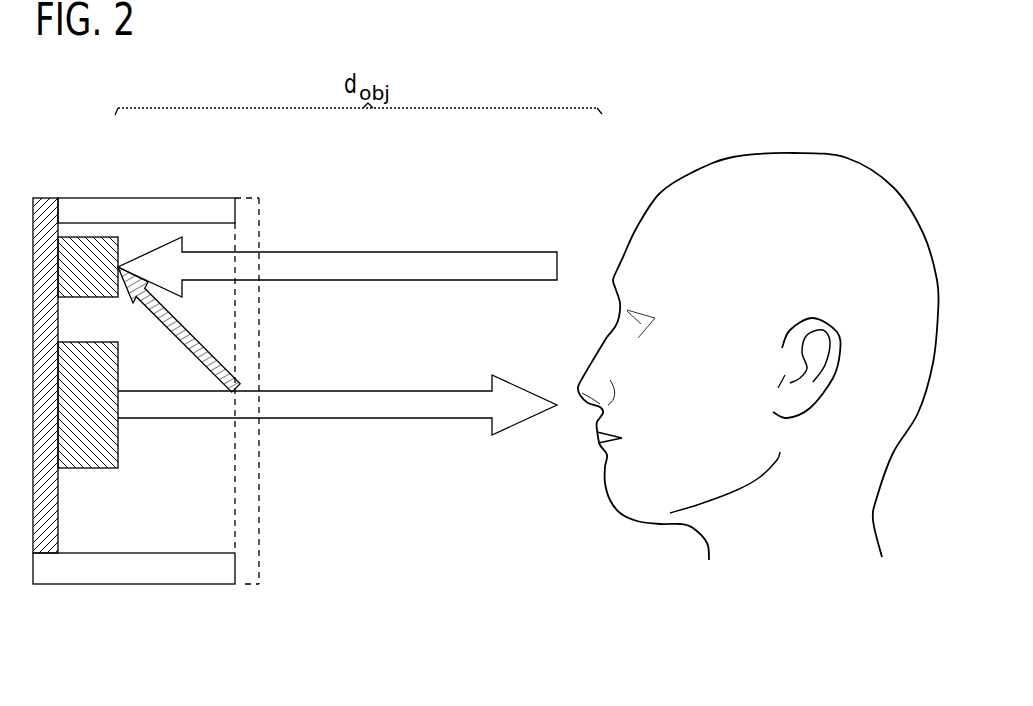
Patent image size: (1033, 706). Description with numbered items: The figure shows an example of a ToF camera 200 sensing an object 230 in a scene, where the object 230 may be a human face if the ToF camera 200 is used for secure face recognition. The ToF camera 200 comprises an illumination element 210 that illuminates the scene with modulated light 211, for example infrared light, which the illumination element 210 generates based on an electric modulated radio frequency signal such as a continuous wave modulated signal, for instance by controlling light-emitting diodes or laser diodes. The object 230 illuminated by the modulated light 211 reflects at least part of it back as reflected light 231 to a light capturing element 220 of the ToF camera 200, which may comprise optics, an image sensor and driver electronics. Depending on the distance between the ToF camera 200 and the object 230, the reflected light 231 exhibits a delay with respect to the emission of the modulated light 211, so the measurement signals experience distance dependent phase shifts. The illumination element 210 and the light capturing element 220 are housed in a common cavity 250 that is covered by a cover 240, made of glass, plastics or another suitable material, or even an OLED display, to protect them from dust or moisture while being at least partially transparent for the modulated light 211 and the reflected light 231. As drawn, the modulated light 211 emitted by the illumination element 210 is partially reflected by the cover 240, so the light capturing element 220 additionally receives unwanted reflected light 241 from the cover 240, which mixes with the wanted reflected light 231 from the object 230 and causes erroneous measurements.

The ToF camera 200 is at (315, 597).
The illumination element 210 is at (84, 470).
The modulated light 211 is at (382, 391).
The light capturing element 220 is at (83, 237).
The object 230 is at (793, 152).
The reflected light 231 is at (382, 252).
The cover 240 is at (248, 198).
The unwanted reflected light 241 is at (148, 315).
The cavity 250 is at (137, 537).